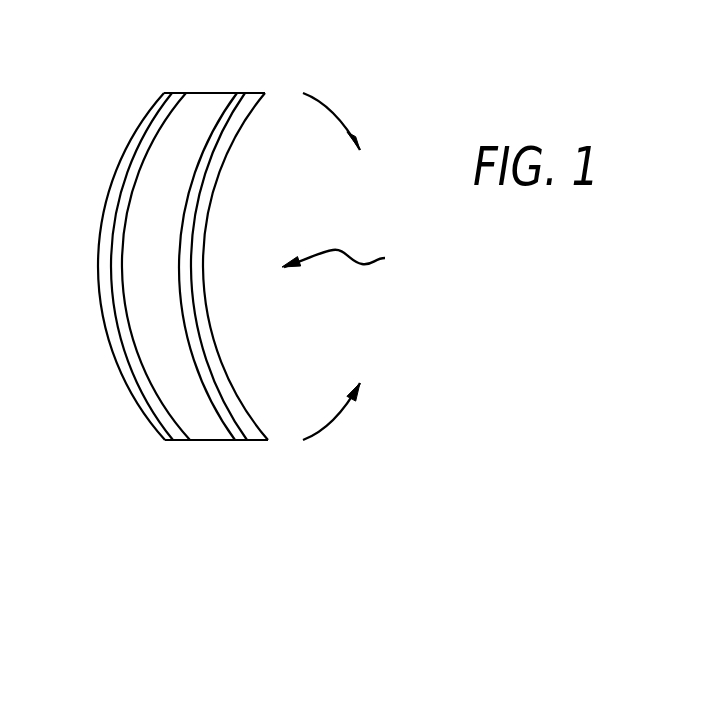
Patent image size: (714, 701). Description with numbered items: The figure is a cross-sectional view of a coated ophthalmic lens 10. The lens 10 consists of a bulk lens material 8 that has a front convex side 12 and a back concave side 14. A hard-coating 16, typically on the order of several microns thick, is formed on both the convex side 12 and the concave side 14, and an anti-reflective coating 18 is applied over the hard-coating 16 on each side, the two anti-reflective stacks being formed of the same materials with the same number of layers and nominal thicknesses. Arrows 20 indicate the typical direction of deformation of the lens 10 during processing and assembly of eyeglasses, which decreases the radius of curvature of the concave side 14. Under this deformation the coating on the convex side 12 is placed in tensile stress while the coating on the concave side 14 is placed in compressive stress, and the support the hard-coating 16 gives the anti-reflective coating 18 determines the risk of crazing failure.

The bulk lens material 8 is at (217, 440).
The ophthalmic lens 10 is at (350, 260).
The front convex side 12 is at (155, 137).
The back concave side 14 is at (178, 268).
The hard-coating 16 is at (177, 93).
The anti-reflective coating 18 is at (125, 377).
The arrows 20 is at (330, 103).